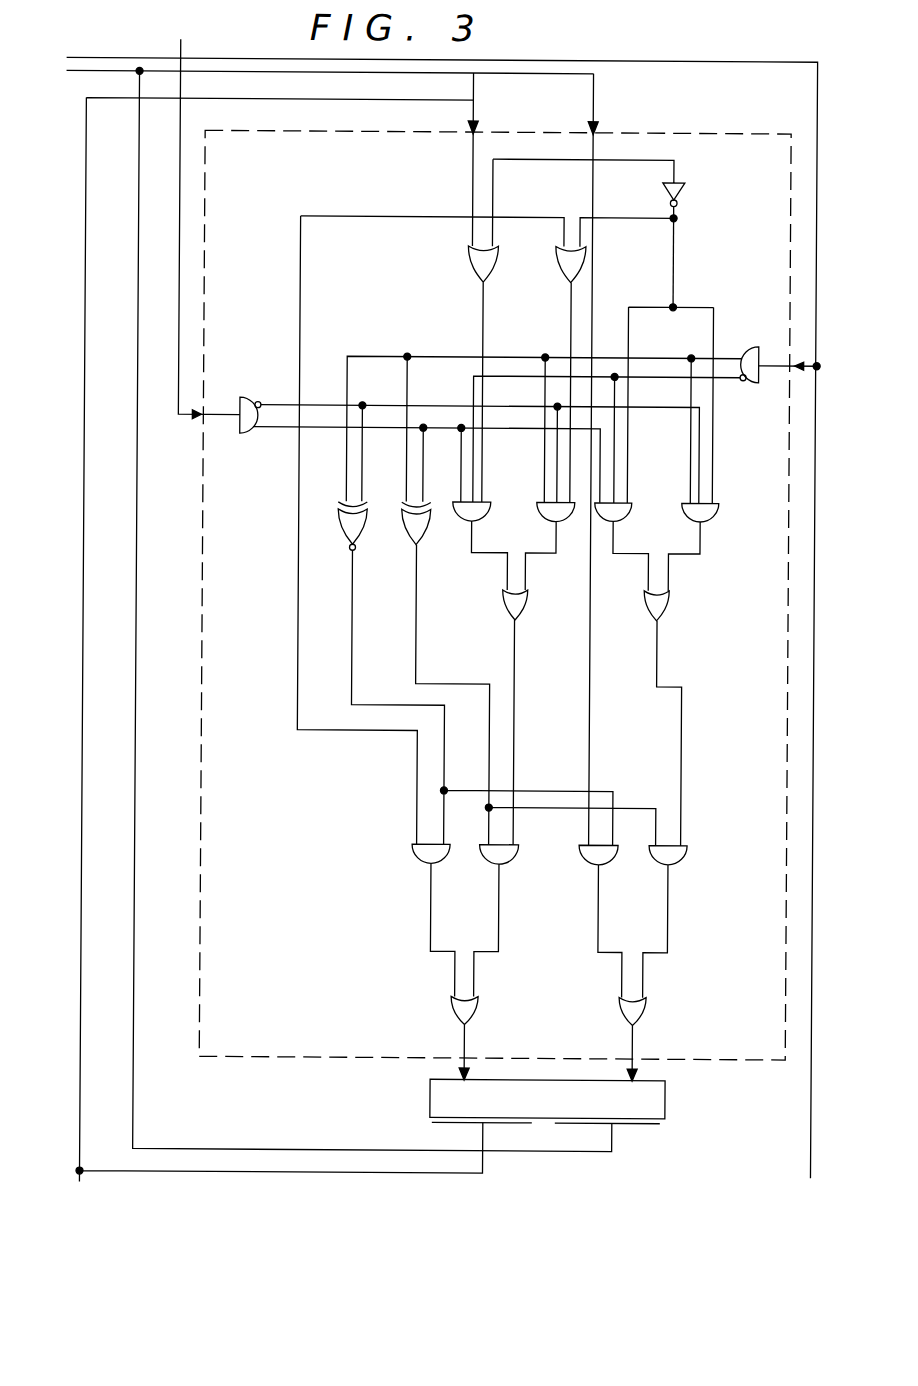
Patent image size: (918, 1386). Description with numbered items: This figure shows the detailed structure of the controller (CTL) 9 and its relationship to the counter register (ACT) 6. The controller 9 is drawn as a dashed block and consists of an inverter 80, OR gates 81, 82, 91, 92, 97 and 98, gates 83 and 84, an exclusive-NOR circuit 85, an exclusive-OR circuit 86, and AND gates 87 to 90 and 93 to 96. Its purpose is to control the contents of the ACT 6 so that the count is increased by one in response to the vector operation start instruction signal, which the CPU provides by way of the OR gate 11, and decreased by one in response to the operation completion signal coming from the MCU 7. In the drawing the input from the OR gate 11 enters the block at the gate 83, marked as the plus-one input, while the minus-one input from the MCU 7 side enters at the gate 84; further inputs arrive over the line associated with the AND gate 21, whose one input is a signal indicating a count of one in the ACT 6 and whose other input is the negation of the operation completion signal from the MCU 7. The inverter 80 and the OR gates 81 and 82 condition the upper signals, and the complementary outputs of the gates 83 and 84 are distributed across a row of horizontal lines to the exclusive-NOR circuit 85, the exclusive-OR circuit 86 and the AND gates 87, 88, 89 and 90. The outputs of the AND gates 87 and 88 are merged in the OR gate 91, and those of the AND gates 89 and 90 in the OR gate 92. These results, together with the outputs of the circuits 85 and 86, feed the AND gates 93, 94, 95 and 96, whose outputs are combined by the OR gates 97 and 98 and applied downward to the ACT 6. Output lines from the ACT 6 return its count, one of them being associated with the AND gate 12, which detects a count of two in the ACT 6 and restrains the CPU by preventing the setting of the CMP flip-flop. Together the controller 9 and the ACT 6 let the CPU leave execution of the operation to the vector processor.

The counter register (ACT) 6 is at (674, 1102).
The MCU 7 is at (811, 1193).
The controller (CTL) 9 is at (714, 126).
The OR gate 11 is at (205, 227).
The AND gate 12 is at (278, 656).
The AND gate 21 is at (424, 615).
The inverter 80 is at (685, 186).
The OR gate 81 is at (498, 265).
The OR gate 82 is at (556, 249).
The gate 83 is at (246, 394).
The gate 84 is at (759, 366).
The exclusive-NOR circuit 85 is at (366, 545).
The exclusive-OR circuit 86 is at (434, 544).
The AND gate 87 is at (489, 518).
The AND gate 88 is at (574, 517).
The AND gate 89 is at (629, 517).
The AND gate 90 is at (715, 516).
The OR gate 91 is at (532, 602).
The OR gate 92 is at (675, 600).
The AND gate 93 is at (452, 860).
The AND gate 94 is at (520, 860).
The AND gate 95 is at (616, 859).
The AND gate 96 is at (686, 858).
The OR gate 97 is at (484, 1007).
The OR gate 98 is at (654, 1006).